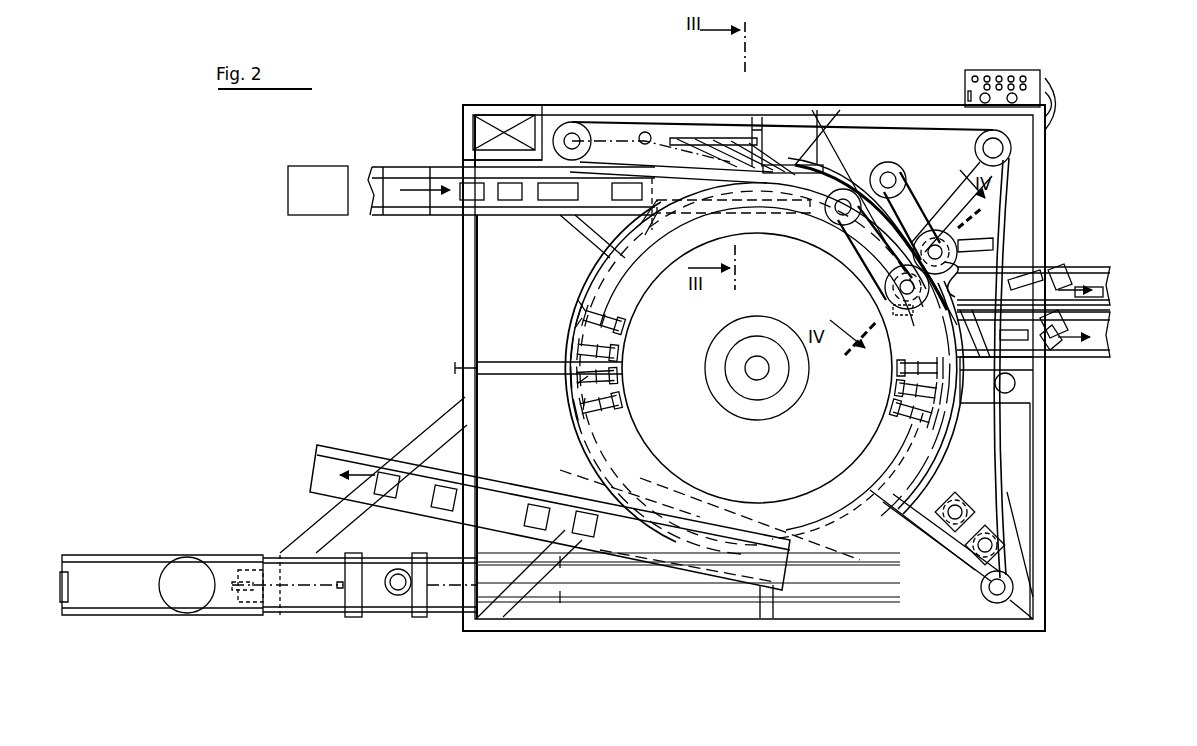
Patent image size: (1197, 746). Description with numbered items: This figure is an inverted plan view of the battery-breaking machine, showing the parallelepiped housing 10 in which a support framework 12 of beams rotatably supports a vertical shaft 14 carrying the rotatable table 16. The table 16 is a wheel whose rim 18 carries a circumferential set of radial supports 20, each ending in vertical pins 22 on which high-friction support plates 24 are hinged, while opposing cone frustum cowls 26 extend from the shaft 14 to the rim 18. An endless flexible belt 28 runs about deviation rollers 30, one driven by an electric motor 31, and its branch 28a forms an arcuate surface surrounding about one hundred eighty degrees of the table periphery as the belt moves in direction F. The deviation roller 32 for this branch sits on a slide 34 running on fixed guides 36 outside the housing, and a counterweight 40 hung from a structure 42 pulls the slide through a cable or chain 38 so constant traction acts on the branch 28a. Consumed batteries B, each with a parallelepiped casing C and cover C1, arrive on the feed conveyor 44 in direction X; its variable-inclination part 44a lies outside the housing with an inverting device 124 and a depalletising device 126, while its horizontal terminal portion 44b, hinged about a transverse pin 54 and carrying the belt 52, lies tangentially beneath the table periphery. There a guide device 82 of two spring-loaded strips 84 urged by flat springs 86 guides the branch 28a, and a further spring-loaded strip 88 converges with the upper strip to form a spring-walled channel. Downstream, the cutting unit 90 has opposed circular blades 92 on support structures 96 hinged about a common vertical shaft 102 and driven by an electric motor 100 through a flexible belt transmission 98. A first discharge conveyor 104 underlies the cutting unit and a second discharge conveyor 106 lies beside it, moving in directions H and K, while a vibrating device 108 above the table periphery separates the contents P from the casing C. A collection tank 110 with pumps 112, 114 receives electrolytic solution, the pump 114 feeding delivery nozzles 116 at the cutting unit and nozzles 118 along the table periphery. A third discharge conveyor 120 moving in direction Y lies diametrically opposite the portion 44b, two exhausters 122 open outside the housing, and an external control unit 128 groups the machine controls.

The housing 10 is at (868, 105).
The support framework 12 is at (486, 376).
The vertical shaft 14 is at (752, 378).
The rotatable table 16 is at (552, 326).
The rim 18 is at (776, 488).
The radial supports 20 is at (630, 312).
The vertical pins 22 is at (585, 322).
The support plate 24 is at (600, 292).
The cone frustum cowls 26 is at (832, 468).
The endless flexible belt 28 is at (897, 133).
The branch 28a is at (966, 279).
The deviation rollers 30 is at (576, 125).
The electric motor 31 is at (645, 132).
The deviation roller 32 is at (398, 598).
The slide 34 is at (352, 617).
The fixed guides 36 is at (298, 612).
The cable or chain 38 is at (290, 585).
The counterweight 40 is at (190, 600).
The structure 42 is at (232, 615).
The feed conveyor belt 44 is at (450, 212).
The part of variable inclination 44a is at (470, 168).
The horizontal terminal portion 44b is at (812, 150).
The belt 52 is at (552, 208).
The horizontal transverse pin 54 is at (690, 205).
The guide device 82 is at (683, 128).
The spring-loaded strips 84 is at (710, 200).
The flat springs 86 is at (750, 152).
The spring-loaded strip 88 is at (634, 238).
The cutting unit 90 is at (858, 262).
The circular horizontal blades 92 is at (990, 210).
The support structure 96 is at (957, 252).
The flexible belt transmission 98 is at (862, 203).
The electric motor 100 is at (878, 172).
The common vertical shaft 102 is at (930, 216).
The first discharge conveyor 104 is at (1105, 267).
The second discharge conveyor 106 is at (1105, 318).
The vibrating device 108 is at (948, 340).
The collection tank 110 is at (1020, 445).
The pump 112 is at (980, 560).
The pump 114 is at (905, 522).
The delivery nozzles 116 is at (896, 316).
The nozzles 118 is at (940, 488).
The third discharge conveyor 120 is at (358, 448).
The exhausters 122 is at (755, 125).
The inverting device 124 is at (388, 168).
The depalletising device 126 is at (318, 166).
The control unit 128 is at (1000, 72).
The accumulator batteries B is at (512, 200).
The casing C is at (440, 490).
The cover C1 is at (1060, 270).
The conveying direction X is at (462, 215).
The direction of movement Y is at (330, 478).
The conveying direction H is at (1062, 279).
The conveying direction K is at (1062, 349).
The contents P is at (1092, 345).
The direction of movement F is at (885, 562).